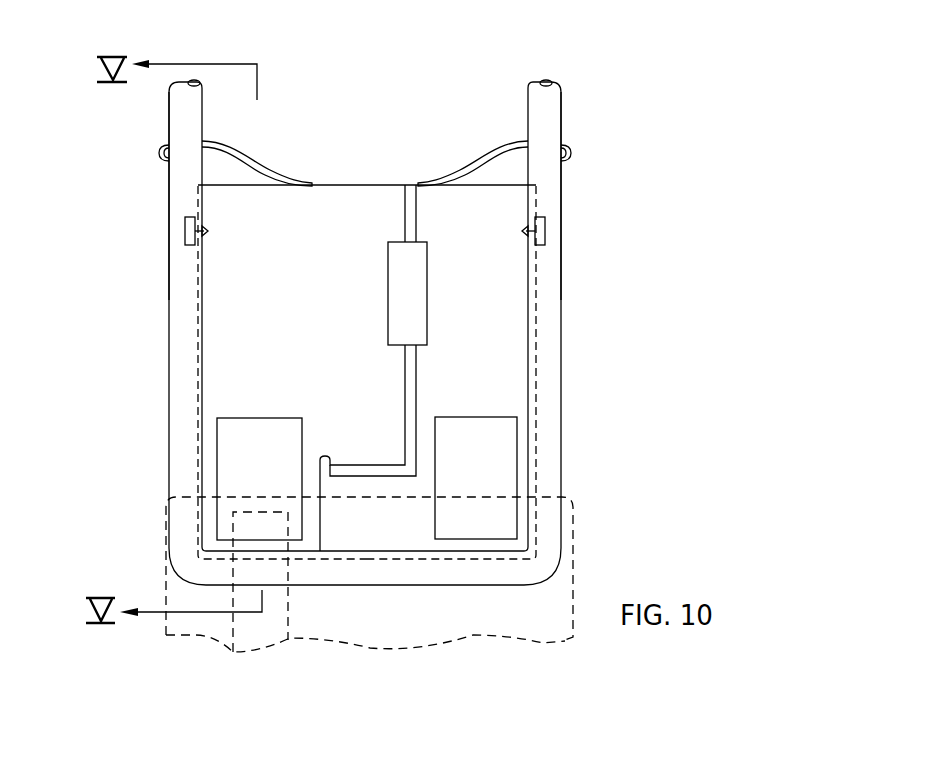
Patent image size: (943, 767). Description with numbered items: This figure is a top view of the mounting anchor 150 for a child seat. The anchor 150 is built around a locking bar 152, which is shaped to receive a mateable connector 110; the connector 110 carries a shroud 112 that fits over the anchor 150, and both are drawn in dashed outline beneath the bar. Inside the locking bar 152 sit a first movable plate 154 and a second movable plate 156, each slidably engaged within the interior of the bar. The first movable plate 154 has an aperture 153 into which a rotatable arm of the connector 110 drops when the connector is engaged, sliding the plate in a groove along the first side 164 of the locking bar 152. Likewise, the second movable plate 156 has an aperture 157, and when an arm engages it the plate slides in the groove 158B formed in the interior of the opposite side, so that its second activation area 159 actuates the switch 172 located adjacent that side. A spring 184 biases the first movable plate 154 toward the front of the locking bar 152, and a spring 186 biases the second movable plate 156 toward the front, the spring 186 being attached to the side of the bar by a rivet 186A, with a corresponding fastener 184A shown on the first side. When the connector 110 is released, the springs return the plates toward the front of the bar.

The mateable connector 110 is at (245, 523).
The shroud 112 is at (573, 555).
The mounting anchor 150 is at (700, 272).
The locking bar 152 is at (395, 585).
The aperture 153 is at (235, 452).
The first movable plate 154 is at (220, 327).
The second movable plate 156 is at (505, 345).
The aperture 157 is at (500, 452).
The groove 158B is at (518, 100).
The second activation area 159 is at (542, 231).
The first side 164 is at (166, 253).
The switch 172 is at (523, 227).
The spring 184 is at (262, 170).
The detent 184A is at (164, 155).
The spring 186 is at (500, 155).
The rivet 186A is at (570, 149).